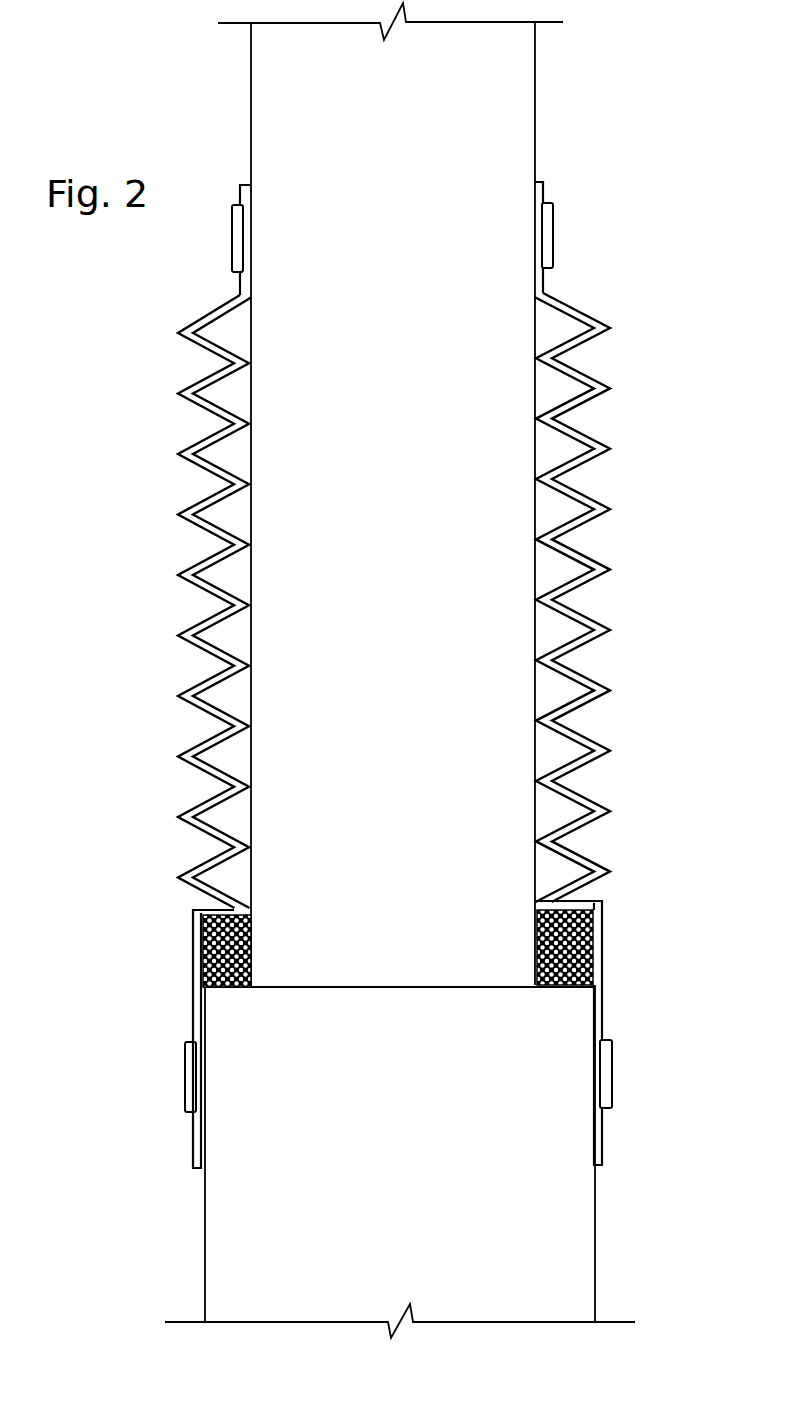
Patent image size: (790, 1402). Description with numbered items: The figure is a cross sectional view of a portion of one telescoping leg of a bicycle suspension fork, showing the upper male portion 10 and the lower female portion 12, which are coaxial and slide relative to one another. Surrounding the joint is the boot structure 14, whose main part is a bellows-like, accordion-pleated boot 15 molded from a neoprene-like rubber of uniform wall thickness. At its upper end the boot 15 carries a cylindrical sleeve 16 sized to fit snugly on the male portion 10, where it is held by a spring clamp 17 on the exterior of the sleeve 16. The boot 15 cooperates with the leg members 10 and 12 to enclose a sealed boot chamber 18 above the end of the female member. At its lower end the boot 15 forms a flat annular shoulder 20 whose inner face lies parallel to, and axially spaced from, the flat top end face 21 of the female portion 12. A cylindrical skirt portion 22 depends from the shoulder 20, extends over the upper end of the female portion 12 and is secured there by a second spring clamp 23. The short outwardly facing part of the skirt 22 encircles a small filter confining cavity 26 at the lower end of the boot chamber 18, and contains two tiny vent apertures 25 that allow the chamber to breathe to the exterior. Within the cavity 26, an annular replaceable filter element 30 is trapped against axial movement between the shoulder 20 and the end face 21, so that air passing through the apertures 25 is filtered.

The male portion 10 is at (510, 778).
The female portion 12 is at (545, 1152).
The boot structure 14 is at (432, 600).
The boot 15 is at (607, 516).
The cylindrical sleeve 16 is at (538, 278).
The spring clamp 17 is at (550, 230).
The boot chamber 18 is at (565, 632).
The annular shoulder 20 is at (583, 903).
The top end face 21 is at (458, 980).
The cylindrical skirt portion 22 is at (597, 1026).
The spring clamp 23 is at (607, 1083).
The vent apertures 25 is at (202, 951).
The filter confining cavity 26 is at (203, 918).
The filter element 30 is at (590, 952).